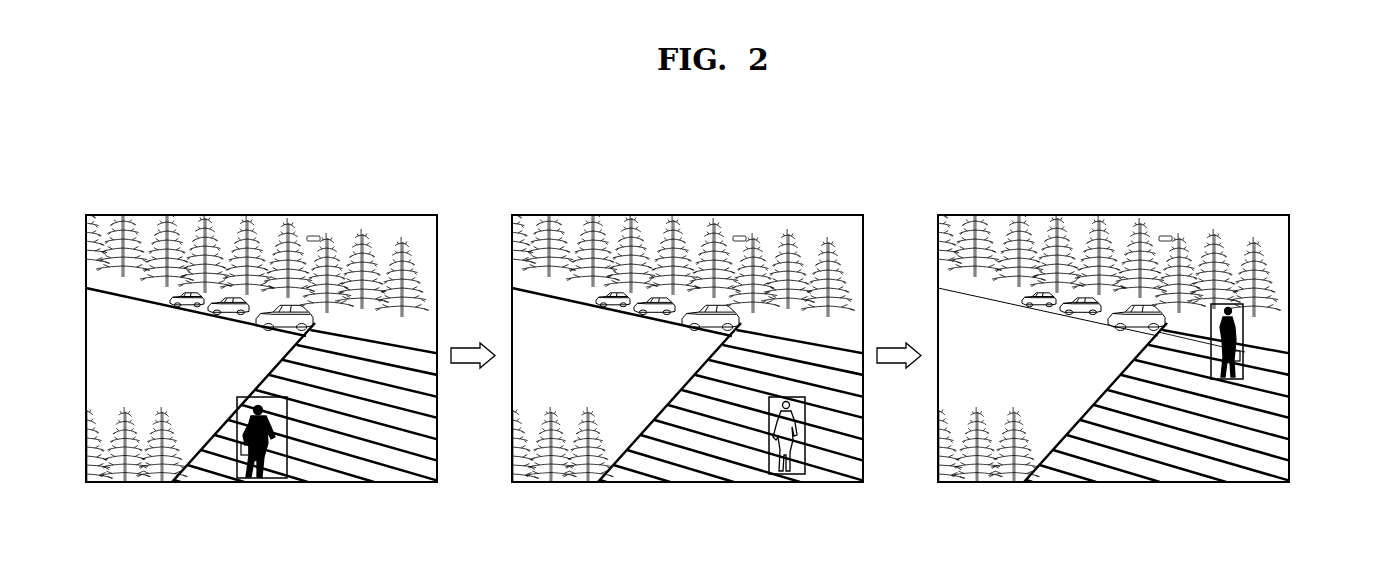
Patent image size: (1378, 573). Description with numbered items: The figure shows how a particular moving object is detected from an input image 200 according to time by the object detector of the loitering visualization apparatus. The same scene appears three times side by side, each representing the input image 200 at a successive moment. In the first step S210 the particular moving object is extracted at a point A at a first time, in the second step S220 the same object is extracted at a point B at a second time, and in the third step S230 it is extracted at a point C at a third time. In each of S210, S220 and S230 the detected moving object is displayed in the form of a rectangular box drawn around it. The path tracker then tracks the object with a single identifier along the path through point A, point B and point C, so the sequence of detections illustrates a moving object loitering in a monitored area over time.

The input image 200 is at (348, 215).
The detection of the moving object at point A S210 is at (261, 482).
The detection of the moving object at point B S220 is at (787, 474).
The detection of the moving object at point C S230 is at (1243, 328).